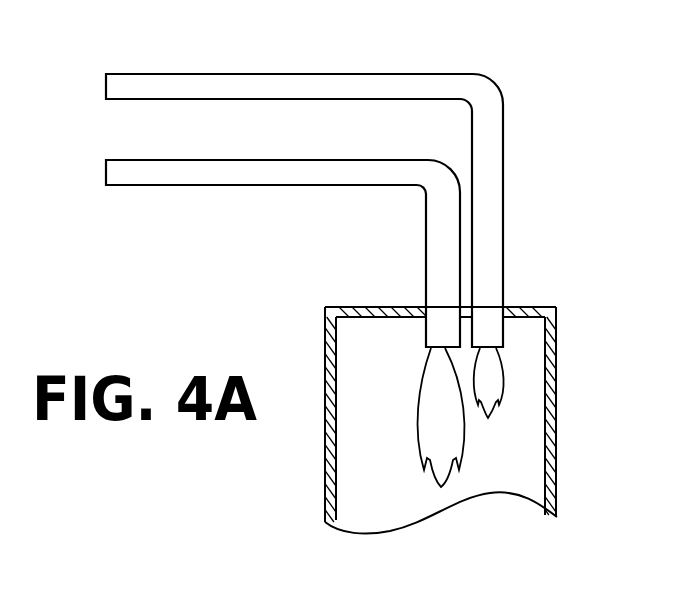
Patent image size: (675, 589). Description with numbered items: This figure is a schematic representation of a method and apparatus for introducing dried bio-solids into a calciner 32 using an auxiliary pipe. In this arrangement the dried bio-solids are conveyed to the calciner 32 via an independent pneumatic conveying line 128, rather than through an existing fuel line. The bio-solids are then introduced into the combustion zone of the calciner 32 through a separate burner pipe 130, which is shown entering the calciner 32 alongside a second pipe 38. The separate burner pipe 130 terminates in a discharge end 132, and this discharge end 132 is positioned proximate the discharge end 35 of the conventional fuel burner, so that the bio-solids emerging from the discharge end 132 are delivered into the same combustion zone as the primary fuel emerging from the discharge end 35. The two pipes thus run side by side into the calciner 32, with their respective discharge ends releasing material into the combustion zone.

The independent pneumatic conveying line 128 is at (291, 74).
The inner gas tube 38 is at (425, 257).
The separate burner pipe 130 is at (507, 333).
The discharge end 132 is at (498, 349).
The discharge end 35 is at (436, 350).
The calciner 32 is at (557, 448).